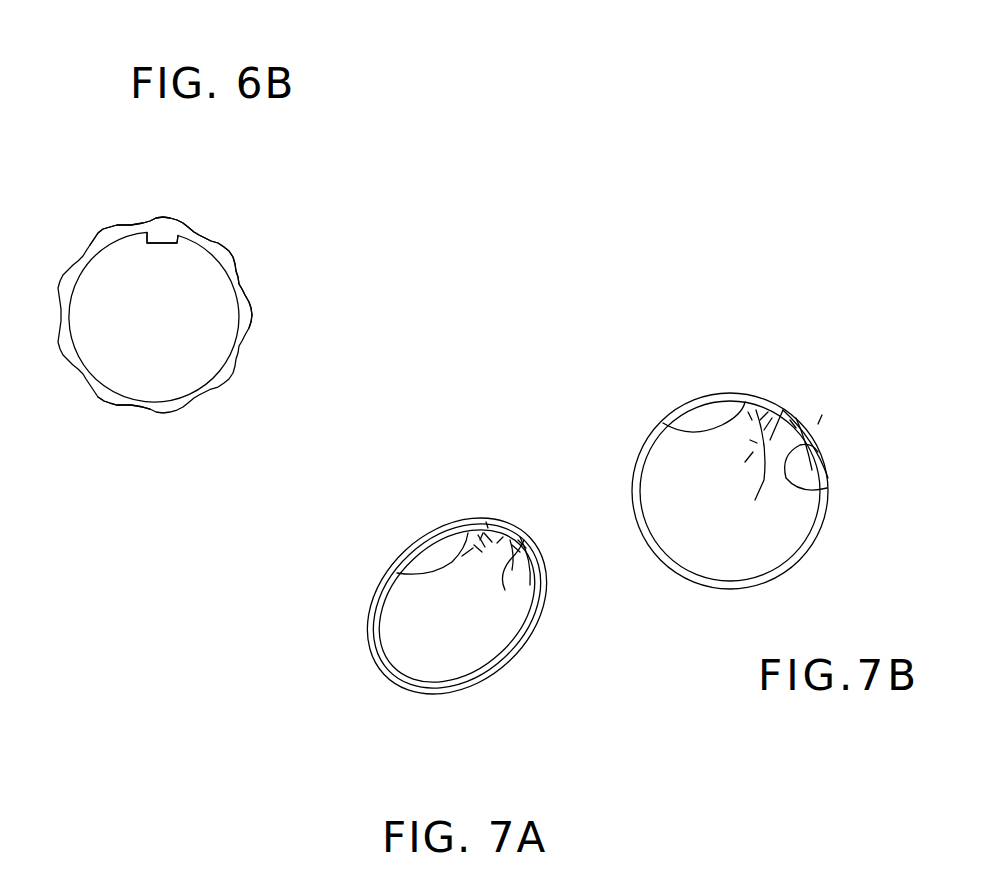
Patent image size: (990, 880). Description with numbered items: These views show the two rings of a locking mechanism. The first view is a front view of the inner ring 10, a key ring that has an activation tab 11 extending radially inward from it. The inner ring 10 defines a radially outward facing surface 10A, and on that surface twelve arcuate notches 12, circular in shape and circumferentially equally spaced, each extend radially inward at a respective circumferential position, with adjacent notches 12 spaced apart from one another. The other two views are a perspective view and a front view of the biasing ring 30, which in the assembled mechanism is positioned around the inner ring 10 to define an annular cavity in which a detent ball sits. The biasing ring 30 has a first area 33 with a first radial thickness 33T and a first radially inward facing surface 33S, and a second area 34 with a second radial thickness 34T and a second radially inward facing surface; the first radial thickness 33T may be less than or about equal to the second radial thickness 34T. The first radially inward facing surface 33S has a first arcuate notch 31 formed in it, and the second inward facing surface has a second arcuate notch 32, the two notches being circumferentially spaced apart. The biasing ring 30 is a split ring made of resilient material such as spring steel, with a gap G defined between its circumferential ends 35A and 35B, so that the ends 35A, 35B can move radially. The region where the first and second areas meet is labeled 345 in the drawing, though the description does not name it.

In FIG. 6B, the inner ring 10 is at (230, 212).
In FIG. 6B, the radially outward facing surface 10A is at (120, 405).
In FIG. 6B, the activation tab 11 is at (160, 243).
In FIG. 6B, the arcuate notches 12 is at (216, 233).
In FIG. 7A, the biasing ring 30 is at (451, 467).
In FIG. 7B, the biasing ring 30 is at (723, 357).
In FIG. 7A, the first arcuate notch 31 is at (397, 573).
In FIG. 7B, the first arcuate notch 31 is at (663, 423).
In FIG. 7A, the second arcuate notch 32 is at (505, 590).
In FIG. 7B, the second arcuate notch 32 is at (827, 488).
In FIG. 7A, the first area 33 is at (472, 516).
In FIG. 7B, the first area 33 is at (784, 396).
In FIG. 7A, the first radial thickness 33T is at (488, 516).
In FIG. 7B, the first radial thickness 33T is at (755, 395).
In FIG. 7B, the first radially inward facing surface 33S is at (757, 443).
In FIG. 7A, the second area 34 is at (530, 526).
In FIG. 7B, the second area 34 is at (801, 411).
In FIG. 7A, the second radial thickness 34T is at (528, 521).
In FIG. 7B, the second radial thickness 34T is at (823, 414).
In FIG. 7A, the flap junction 345 is at (503, 537).
In FIG. 7B, the flap junction 345 is at (770, 471).
In FIG. 7A, the circumferential end 35A is at (462, 556).
In FIG. 7B, the circumferential end 35A is at (745, 462).
In FIG. 7A, the circumferential end 35B is at (483, 533).
In FIG. 7B, the circumferential end 35B is at (770, 440).
In FIG. 7B, the gap G is at (808, 415).